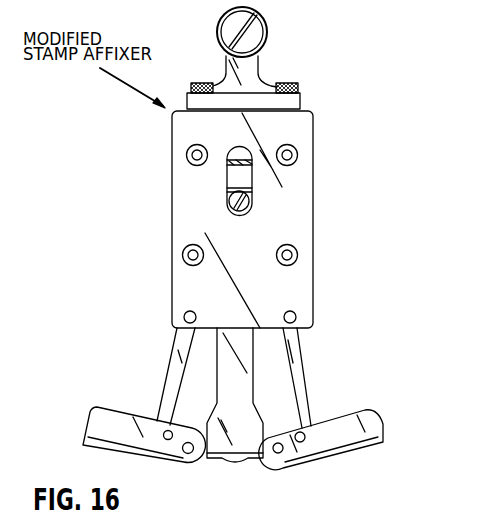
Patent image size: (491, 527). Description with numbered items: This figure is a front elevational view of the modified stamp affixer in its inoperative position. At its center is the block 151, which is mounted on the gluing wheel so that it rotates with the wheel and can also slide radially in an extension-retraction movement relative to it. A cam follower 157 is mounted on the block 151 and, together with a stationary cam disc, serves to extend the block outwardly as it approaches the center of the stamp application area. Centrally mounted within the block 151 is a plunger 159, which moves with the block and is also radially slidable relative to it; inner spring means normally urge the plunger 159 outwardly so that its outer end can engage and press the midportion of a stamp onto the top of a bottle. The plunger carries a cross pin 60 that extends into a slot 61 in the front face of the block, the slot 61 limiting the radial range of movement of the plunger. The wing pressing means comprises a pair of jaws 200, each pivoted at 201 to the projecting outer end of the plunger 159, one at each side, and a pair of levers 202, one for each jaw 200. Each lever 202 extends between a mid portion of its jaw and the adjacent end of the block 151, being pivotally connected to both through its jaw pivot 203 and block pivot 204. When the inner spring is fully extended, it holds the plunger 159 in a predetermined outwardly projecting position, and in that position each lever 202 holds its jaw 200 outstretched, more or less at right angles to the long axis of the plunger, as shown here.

The cam follower 157 is at (267, 34).
The block 151 is at (255, 261).
The slot 61 is at (232, 178).
The cross pin 60 is at (248, 201).
The block pivots 204 is at (296, 317).
The levers 202 is at (312, 394).
The plunger 159 is at (247, 397).
The jaw pivot on plunger 201 is at (282, 468).
The jaws 200 is at (377, 428).
The jaw pivots 203 is at (305, 436).